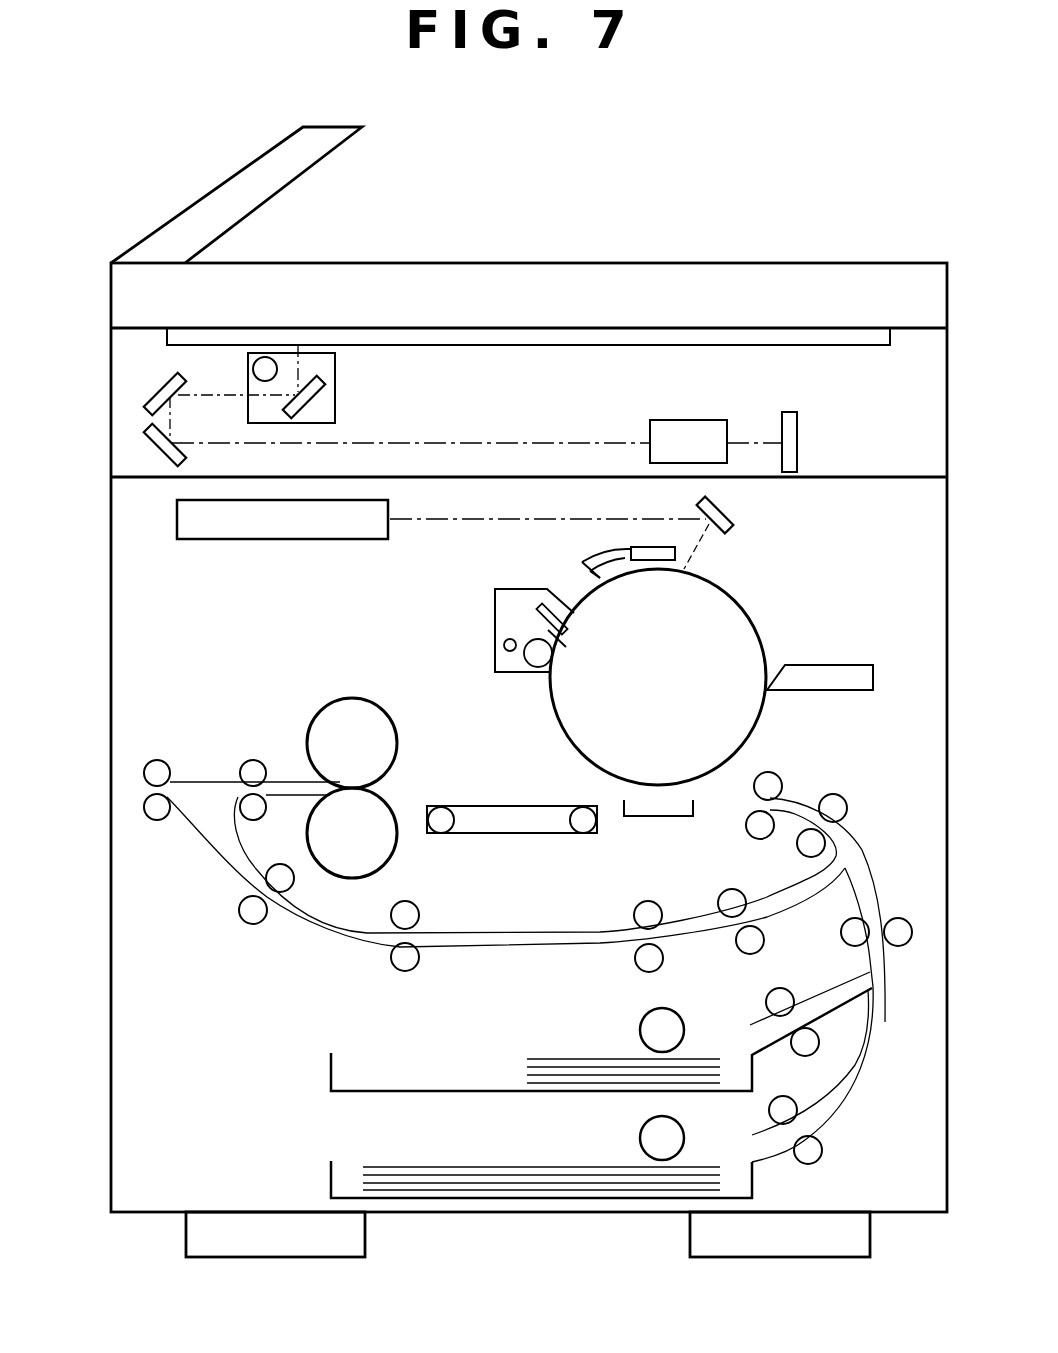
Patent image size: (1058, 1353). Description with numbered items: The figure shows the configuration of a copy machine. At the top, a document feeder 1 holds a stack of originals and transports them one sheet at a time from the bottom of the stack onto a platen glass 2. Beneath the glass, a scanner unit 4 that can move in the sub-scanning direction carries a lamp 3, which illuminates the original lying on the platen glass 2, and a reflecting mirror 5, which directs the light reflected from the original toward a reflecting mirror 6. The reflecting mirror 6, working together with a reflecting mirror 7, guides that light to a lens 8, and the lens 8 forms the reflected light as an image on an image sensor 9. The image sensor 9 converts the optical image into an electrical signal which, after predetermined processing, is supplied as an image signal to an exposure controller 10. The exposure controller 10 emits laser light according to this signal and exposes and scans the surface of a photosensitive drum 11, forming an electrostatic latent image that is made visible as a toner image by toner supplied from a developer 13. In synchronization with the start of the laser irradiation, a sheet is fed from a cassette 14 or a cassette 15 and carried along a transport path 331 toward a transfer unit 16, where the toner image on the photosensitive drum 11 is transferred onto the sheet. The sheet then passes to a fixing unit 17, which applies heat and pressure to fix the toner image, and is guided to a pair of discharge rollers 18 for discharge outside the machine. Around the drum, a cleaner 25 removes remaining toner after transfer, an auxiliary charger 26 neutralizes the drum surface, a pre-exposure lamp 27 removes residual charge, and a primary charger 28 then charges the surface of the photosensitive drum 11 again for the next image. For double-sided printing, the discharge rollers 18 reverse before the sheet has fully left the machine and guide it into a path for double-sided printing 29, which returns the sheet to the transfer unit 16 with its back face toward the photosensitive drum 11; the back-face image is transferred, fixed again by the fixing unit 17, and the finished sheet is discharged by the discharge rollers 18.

The document feeder 1 is at (320, 160).
The platen glass 2 is at (487, 328).
The lamp 3 is at (265, 357).
The scanner unit 4 is at (336, 365).
The reflecting mirror 5 is at (322, 406).
The reflecting mirror 6 is at (150, 391).
The reflecting mirror 7 is at (150, 445).
The lens 8 is at (690, 420).
The image sensor 9 is at (789, 412).
The exposure controller 10 is at (208, 540).
The photosensitive drum 11 is at (760, 625).
The developer 13 is at (853, 665).
The cassette 14 is at (331, 1073).
The cassette 15 is at (331, 1181).
The transfer unit 16 is at (663, 817).
The fixing unit 17 is at (396, 743).
The discharge rollers 18 is at (145, 762).
The cleaner 25 is at (494, 611).
The auxiliary charger 26 is at (582, 565).
The pre-exposure lamp 27 is at (614, 549).
The primary charger 28 is at (690, 556).
The path for double-sided printing 29 is at (522, 930).
The transport path 331 is at (877, 1022).